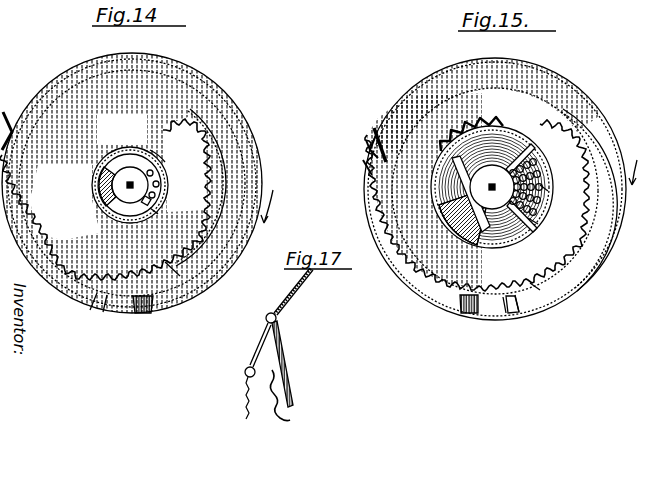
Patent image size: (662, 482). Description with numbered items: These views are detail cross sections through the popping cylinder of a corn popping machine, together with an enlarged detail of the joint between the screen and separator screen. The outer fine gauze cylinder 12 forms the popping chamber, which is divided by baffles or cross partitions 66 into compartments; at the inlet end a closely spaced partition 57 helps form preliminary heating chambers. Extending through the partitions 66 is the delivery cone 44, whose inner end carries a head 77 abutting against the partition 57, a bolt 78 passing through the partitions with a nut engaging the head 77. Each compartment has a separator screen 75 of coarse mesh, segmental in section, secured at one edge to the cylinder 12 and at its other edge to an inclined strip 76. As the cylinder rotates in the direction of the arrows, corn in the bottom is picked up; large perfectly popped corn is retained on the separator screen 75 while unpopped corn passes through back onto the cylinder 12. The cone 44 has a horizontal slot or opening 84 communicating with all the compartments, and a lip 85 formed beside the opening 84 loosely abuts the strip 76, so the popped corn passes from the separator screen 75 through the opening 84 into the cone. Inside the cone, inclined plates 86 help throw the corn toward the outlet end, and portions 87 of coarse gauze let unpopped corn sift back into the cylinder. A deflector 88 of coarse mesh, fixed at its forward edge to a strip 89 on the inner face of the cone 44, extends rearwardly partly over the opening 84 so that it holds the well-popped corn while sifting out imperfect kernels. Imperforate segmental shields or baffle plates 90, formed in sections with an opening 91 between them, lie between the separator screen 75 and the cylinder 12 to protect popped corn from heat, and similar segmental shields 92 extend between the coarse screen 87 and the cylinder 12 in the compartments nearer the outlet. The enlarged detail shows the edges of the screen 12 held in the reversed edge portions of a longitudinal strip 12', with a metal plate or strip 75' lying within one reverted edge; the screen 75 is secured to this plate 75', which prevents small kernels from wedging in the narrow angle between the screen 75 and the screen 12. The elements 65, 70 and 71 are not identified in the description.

In FIG. 14, the popping cylinder 12 is at (135, 183).
In FIG. 15, the popping cylinder 12 is at (478, 189).
In FIG. 17, the popping cylinder 12 is at (299, 295).
In FIG. 15, the longitudinally extending strip 12' is at (347, 174).
In FIG. 17, the longitudinally extending strip 12' is at (241, 371).
In FIG. 14, the delivery cone 44 is at (94, 184).
In FIG. 15, the delivery cone 44 is at (540, 165).
In FIG. 14, the partition 57 is at (82, 90).
In FIG. 14, the lug 65 is at (143, 313).
In FIG. 15, the baffles or cross partitions 66 is at (523, 78).
In FIG. 15, the lug 70 is at (512, 305).
In FIG. 15, the block 71 is at (486, 314).
In FIG. 14, the separator screen 75 is at (95, 217).
In FIG. 15, the separator screen 75 is at (495, 213).
In FIG. 17, the separator screen 75 is at (310, 399).
In FIG. 14, the metal plate or strip 75' is at (12, 111).
In FIG. 15, the metal plate or strip 75' is at (341, 137).
In FIG. 17, the metal plate or strip 75' is at (301, 364).
In FIG. 14, the inclined strip 76 is at (208, 158).
In FIG. 15, the inclined strip 76 is at (590, 135).
In FIG. 14, the head 77 is at (122, 166).
In FIG. 15, the head 77 is at (477, 143).
In FIG. 14, the bolt 78 is at (131, 178).
In FIG. 15, the bolt 78 is at (443, 150).
In FIG. 14, the slot or opening 84 is at (166, 169).
In FIG. 15, the slot or opening 84 is at (540, 155).
In FIG. 14, the lip 85 is at (150, 150).
In FIG. 15, the lip 85 is at (535, 118).
In FIG. 14, the inclined plates 86 is at (106, 196).
In FIG. 15, the inclined plates 86 is at (478, 233).
In FIG. 15, the coarse gauze portions 87 is at (380, 137).
In FIG. 14, the deflector 88 is at (164, 190).
In FIG. 15, the deflector 88 is at (545, 188).
In FIG. 14, the strip 89 is at (154, 212).
In FIG. 15, the strip 89 is at (535, 221).
In FIG. 14, the shields or baffle plates 90 is at (200, 130).
In FIG. 15, the shields or baffle plates 90 is at (580, 253).
In FIG. 14, the opening 91 is at (173, 279).
In FIG. 15, the opening 91 is at (535, 287).
In FIG. 15, the baffles or shields 92 is at (448, 130).